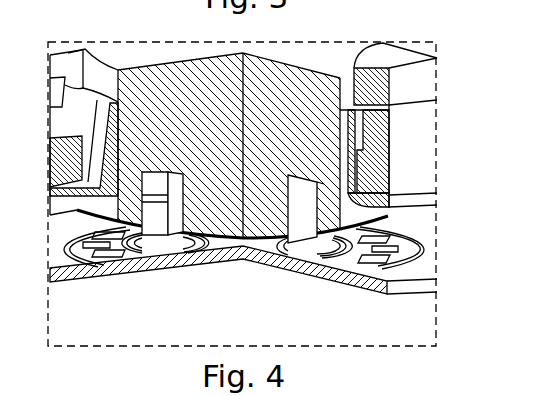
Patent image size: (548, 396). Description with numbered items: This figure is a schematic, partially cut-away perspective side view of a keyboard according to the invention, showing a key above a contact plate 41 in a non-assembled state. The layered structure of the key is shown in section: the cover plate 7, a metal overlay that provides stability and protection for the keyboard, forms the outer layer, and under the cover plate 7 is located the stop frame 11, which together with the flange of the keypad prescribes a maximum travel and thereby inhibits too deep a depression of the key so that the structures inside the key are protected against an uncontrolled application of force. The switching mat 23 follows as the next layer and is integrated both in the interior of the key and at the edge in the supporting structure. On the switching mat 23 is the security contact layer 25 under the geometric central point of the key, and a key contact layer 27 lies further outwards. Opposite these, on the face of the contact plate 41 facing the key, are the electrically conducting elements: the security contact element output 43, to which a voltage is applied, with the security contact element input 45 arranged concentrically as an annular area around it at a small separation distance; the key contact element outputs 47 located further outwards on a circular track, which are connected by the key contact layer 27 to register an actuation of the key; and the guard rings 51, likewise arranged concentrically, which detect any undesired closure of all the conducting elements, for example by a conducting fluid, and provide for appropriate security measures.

The cover plate 7 is at (415, 85).
The stop frame 11 is at (418, 140).
The switching mat 23 is at (137, 52).
The security contact layer 25 is at (216, 246).
The key contact layer 27 is at (141, 233).
The contact plate 41 is at (428, 266).
The security contact element output 43 is at (259, 247).
The security contact element input 45 is at (186, 245).
The key contact element output 47 is at (109, 262).
The guard ring 51 is at (422, 249).